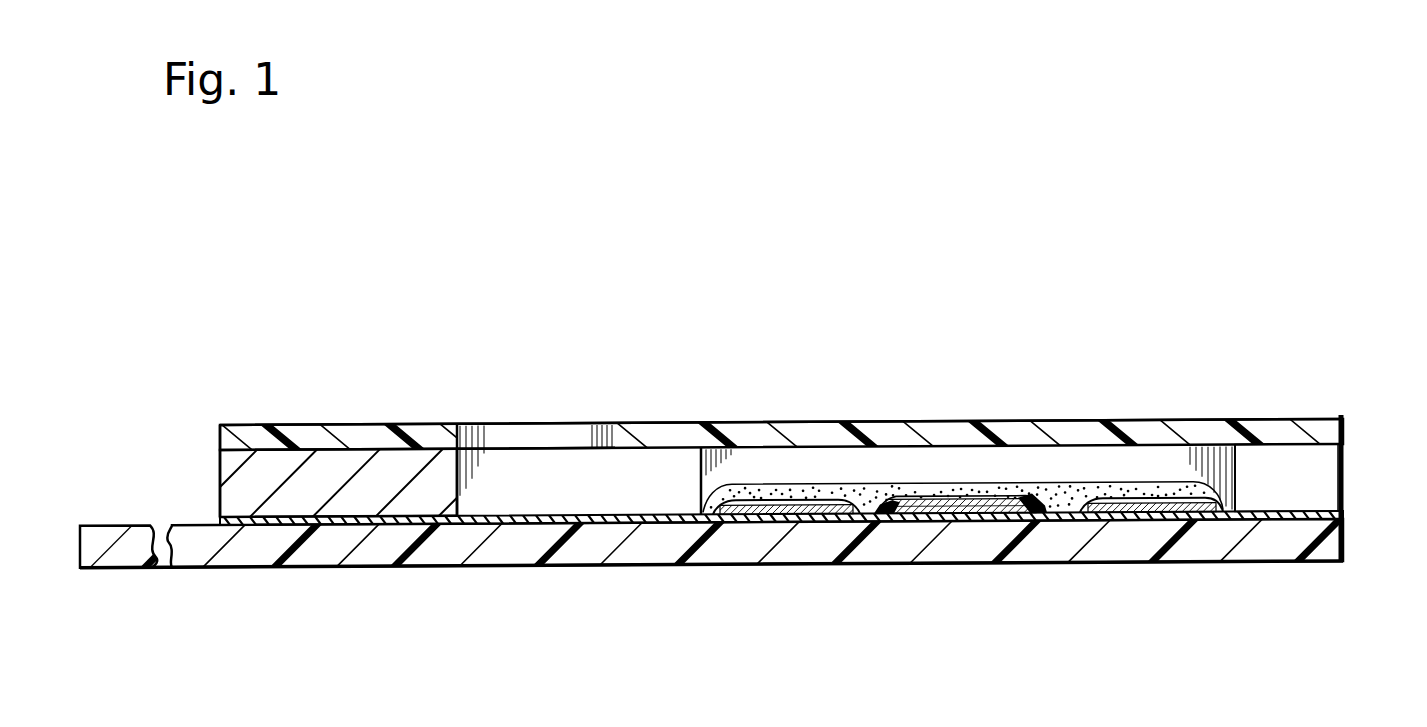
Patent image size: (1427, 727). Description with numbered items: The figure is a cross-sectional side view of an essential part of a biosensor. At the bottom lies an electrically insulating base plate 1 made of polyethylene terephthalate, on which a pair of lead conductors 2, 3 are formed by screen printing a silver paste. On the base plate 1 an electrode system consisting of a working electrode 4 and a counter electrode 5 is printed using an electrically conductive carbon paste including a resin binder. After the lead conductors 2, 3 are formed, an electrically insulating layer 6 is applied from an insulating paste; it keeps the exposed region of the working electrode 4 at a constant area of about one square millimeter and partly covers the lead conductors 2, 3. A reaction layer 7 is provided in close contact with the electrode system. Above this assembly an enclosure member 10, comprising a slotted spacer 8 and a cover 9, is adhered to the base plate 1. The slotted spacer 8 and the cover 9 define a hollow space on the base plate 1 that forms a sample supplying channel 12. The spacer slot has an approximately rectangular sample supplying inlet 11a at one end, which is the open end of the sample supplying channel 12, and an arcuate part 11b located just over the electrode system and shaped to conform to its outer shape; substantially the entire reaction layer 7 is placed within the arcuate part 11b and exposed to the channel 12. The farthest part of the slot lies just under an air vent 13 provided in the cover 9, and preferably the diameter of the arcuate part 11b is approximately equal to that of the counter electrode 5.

The electrically insulating base plate 1 is at (236, 553).
The lead conductor 2 is at (965, 520).
The lead conductor 3 is at (803, 522).
The working electrode 4 is at (948, 499).
The counter electrode 5 is at (776, 497).
The electrically insulating layer 6 is at (651, 516).
The reaction layer 7 is at (996, 492).
The slotted spacer 8 is at (253, 481).
The cover 9 is at (318, 426).
The enclosure member 10 is at (155, 410).
The sample supplying inlet 11a is at (1320, 483).
The arcuate part 11b is at (822, 470).
The sample supplying channel 12 is at (616, 490).
The air vent 13 is at (538, 441).